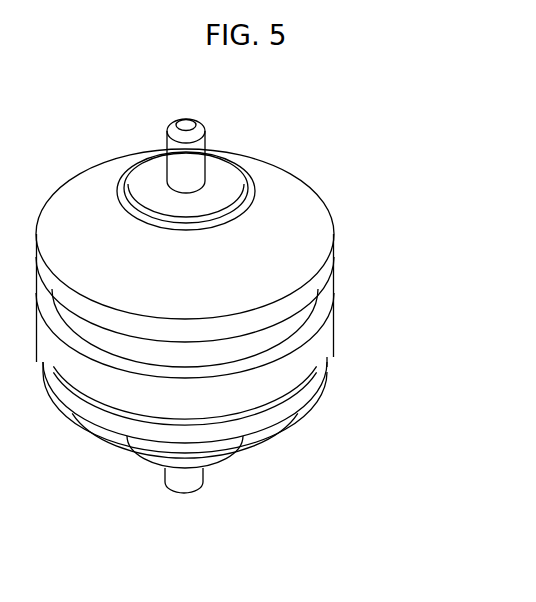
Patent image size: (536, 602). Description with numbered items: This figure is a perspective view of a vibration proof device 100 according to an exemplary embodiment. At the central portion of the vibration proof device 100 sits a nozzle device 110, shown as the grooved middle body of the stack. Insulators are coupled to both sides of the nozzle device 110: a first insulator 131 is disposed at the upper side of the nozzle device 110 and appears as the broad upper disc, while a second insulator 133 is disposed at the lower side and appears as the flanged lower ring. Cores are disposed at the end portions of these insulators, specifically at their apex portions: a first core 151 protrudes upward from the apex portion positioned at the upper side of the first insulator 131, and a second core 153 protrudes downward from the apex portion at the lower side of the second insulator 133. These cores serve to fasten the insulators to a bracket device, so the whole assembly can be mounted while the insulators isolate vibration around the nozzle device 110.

The vibration proof device 100 is at (87, 96).
The first core 151 is at (182, 160).
The first insulator 131 is at (300, 229).
The nozzle device 110 is at (318, 345).
The second insulator 133 is at (310, 445).
The second core 153 is at (193, 481).